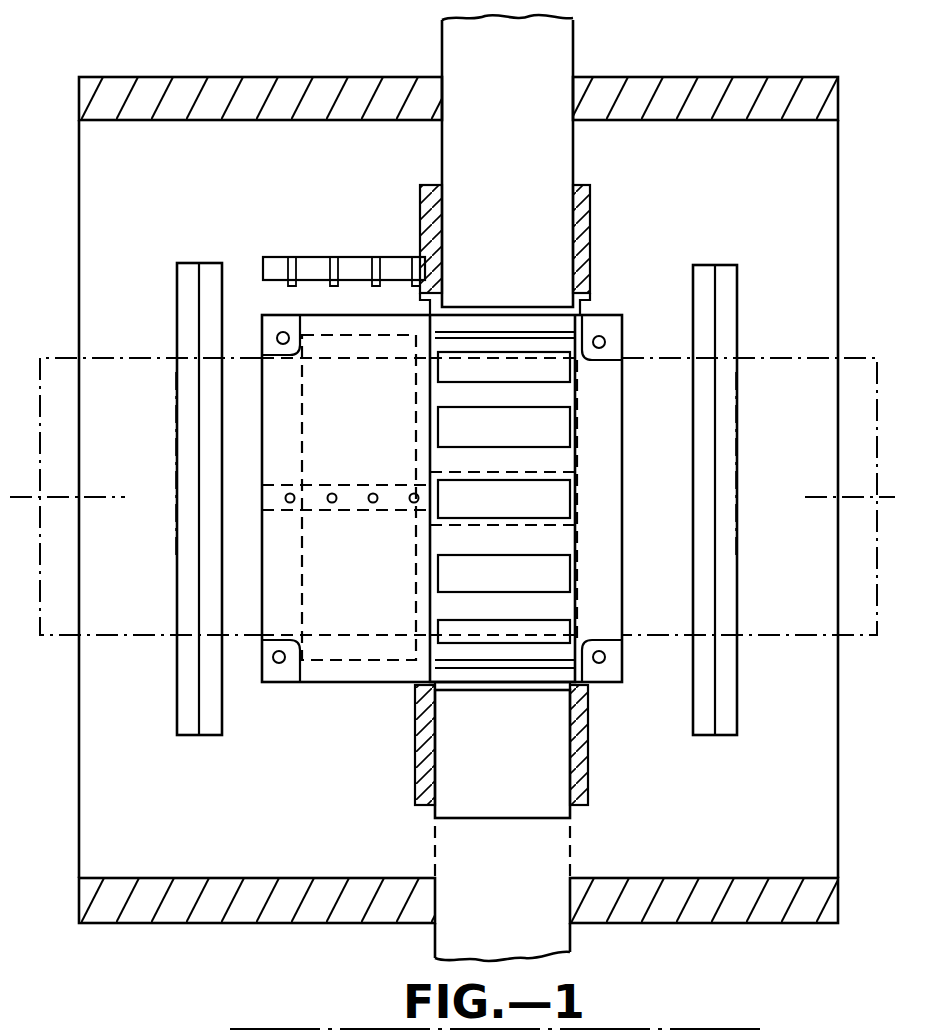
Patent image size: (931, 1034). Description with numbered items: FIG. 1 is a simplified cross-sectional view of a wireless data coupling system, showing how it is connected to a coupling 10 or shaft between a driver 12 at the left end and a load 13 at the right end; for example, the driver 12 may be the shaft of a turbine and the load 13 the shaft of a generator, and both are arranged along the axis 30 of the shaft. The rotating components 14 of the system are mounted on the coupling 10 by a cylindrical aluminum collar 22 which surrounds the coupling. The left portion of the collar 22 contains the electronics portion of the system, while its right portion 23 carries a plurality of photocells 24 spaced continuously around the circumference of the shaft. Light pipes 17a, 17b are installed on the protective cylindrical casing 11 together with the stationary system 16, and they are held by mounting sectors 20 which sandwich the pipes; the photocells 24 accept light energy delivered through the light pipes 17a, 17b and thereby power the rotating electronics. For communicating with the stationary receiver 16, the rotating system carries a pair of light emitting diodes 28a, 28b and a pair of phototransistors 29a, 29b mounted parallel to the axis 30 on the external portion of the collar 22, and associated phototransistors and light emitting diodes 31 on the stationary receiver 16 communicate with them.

The coupling 10 is at (215, 262).
The protective cylindrical casing 11 is at (262, 90).
The driver 12 is at (158, 356).
The load 13 is at (822, 358).
The rotating components 14 is at (380, 734).
The stationary system 16 is at (322, 202).
The light pipe 17a is at (575, 170).
The light pipe 17b is at (553, 774).
The sectors 20 is at (590, 222).
The cylindrical collar 22 is at (330, 683).
The right portion of the collar 23 is at (518, 556).
The photocells 24 is at (568, 492).
The light emitting diode 28a is at (290, 492).
The light emitting diode 28b is at (332, 492).
The phototransistor 29a is at (373, 504).
The phototransistor 29b is at (412, 504).
The axis 30 is at (34, 496).
The phototransistors and light emitting diodes 31 is at (384, 234).